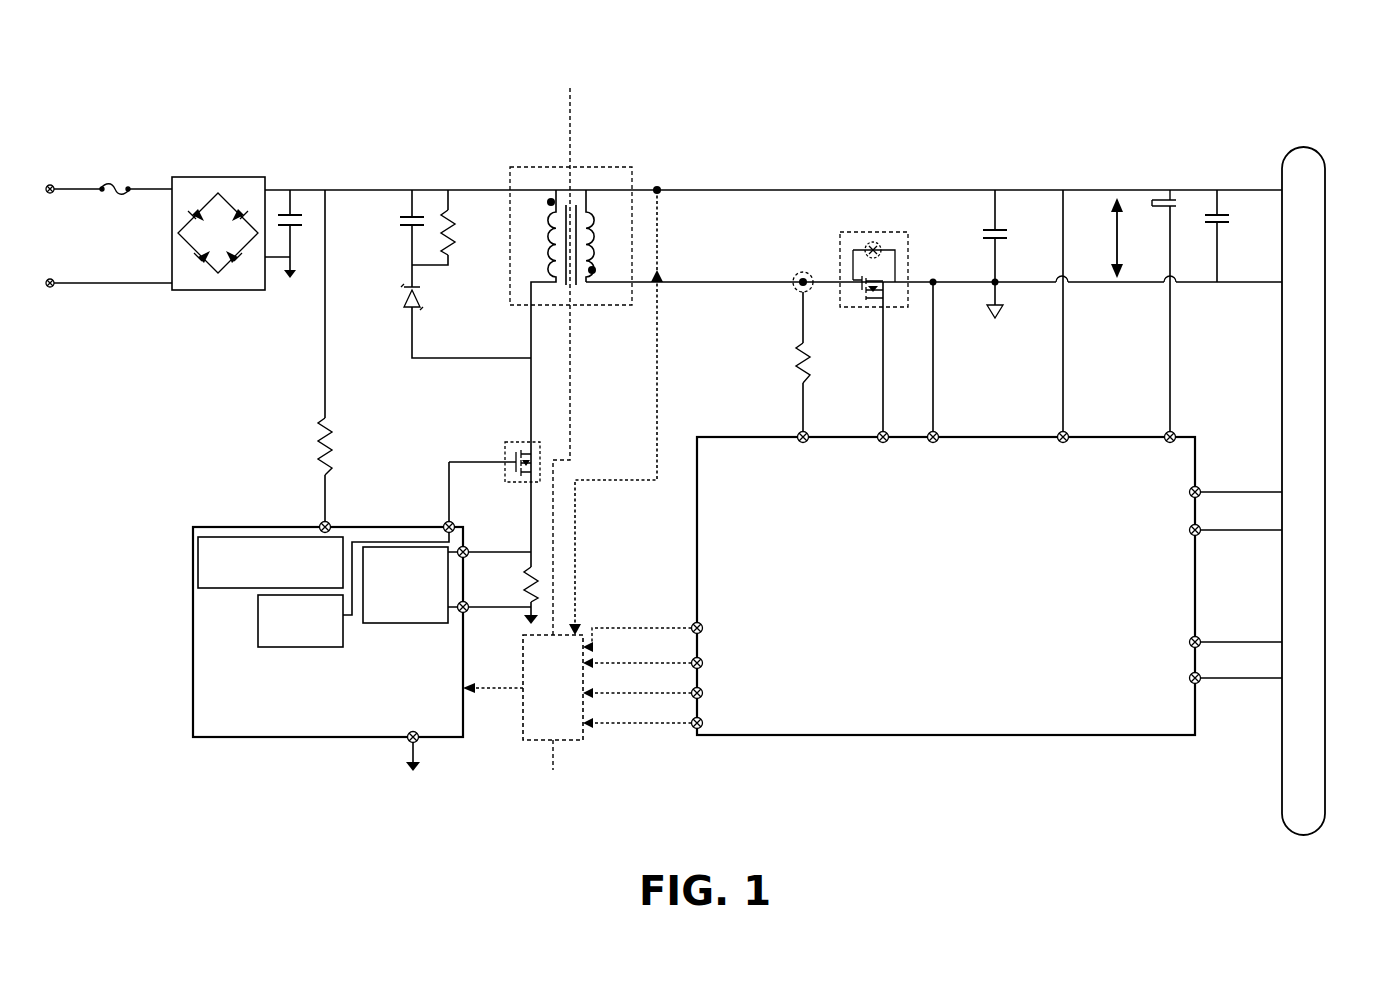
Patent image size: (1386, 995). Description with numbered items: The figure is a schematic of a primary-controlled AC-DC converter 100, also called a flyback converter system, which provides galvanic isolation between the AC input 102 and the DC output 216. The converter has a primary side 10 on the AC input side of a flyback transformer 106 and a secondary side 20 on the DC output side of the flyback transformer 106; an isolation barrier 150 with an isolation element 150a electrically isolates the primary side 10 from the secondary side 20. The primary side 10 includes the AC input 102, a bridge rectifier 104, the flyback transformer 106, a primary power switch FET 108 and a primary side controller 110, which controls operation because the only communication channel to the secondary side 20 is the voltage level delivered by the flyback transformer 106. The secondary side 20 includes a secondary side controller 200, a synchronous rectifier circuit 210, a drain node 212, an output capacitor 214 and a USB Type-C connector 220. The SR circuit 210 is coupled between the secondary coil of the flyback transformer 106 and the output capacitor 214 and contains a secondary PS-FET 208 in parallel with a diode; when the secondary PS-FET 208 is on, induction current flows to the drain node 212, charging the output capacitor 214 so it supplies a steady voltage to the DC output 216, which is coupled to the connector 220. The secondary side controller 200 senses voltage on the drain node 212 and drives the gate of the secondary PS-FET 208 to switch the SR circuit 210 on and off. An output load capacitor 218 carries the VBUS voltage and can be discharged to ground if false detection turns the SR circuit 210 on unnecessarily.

The primary-controlled AC-DC converter 100 is at (792, 62).
The AC input 102 is at (40, 253).
The bridge rectifier 104 is at (212, 290).
The flyback transformer 106 is at (612, 305).
The primary power switch field-effect transistor 108 is at (505, 455).
The primary side controller 110 is at (311, 725).
The primary side 10 is at (553, 148).
The secondary side 20 is at (607, 148).
The isolation barrier 150 is at (582, 103).
The isolation element 150a is at (531, 702).
The secondary side controller 200 is at (916, 612).
The secondary PS-FET 208 is at (866, 294).
The synchronous rectifier circuit 210 is at (840, 252).
The drain node 212 is at (797, 290).
The output capacitor 214 is at (983, 233).
The DC output 216 is at (1110, 247).
The output load capacitor 218 is at (1230, 212).
The USB Type-C connector 220 is at (1327, 237).